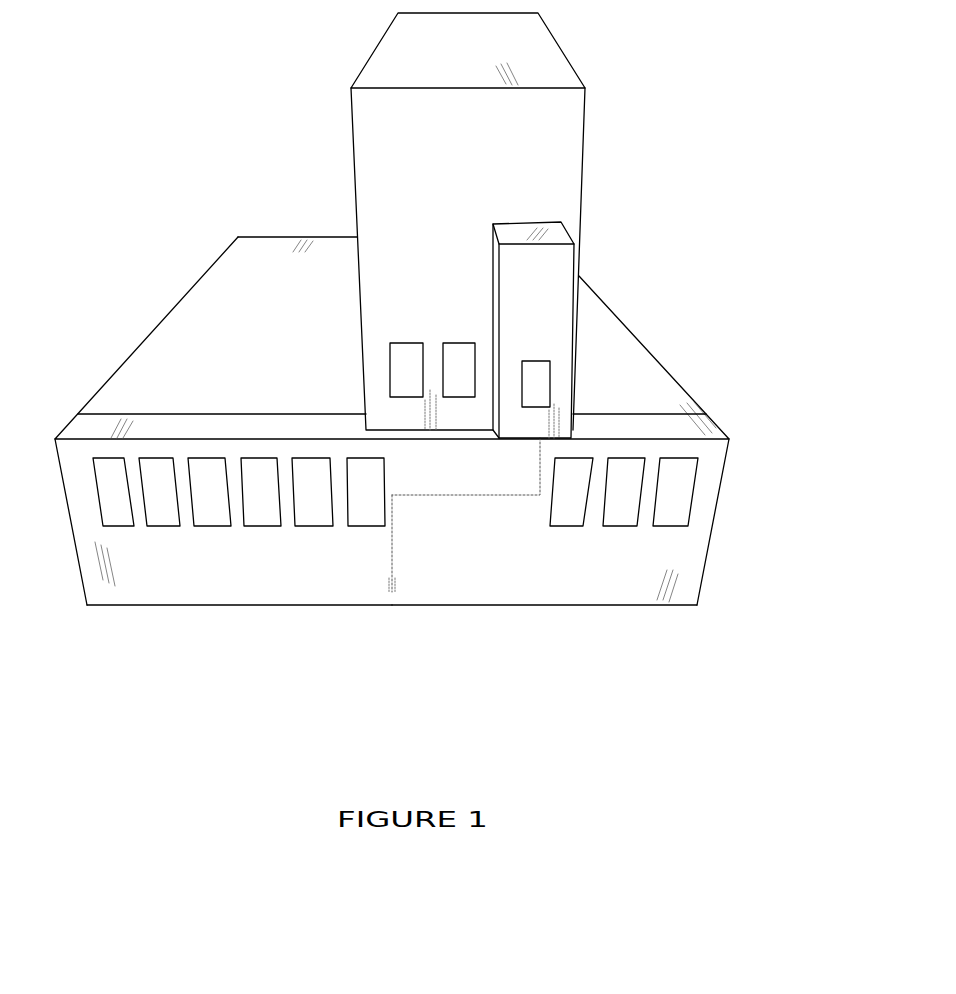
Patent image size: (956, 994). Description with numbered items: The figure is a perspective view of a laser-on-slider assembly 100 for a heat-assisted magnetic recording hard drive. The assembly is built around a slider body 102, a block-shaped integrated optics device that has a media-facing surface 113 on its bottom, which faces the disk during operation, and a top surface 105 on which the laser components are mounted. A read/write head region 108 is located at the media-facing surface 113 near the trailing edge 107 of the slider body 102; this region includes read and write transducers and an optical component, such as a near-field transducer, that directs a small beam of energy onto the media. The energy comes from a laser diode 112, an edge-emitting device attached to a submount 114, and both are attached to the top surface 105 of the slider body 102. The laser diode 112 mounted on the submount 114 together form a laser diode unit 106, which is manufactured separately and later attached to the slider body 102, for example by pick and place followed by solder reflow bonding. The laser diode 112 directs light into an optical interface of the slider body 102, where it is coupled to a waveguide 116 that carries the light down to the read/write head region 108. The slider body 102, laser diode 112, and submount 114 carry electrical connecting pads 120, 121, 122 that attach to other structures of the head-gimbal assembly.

The slider assembly 100 is at (743, 118).
The slider body 102 is at (172, 278).
The top surface 105 is at (667, 403).
The laser diode unit 106 is at (307, 97).
The trailing edge 107 is at (192, 606).
The read/write head region 108 is at (393, 597).
The laser diode 112 is at (567, 240).
The media-facing surface 113 is at (643, 606).
The submount 114 is at (558, 53).
The waveguide 116 is at (443, 497).
The electrical connecting pads 120 is at (163, 519).
The electrical connecting pads 121 is at (550, 378).
The electrical connecting pads 122 is at (452, 343).